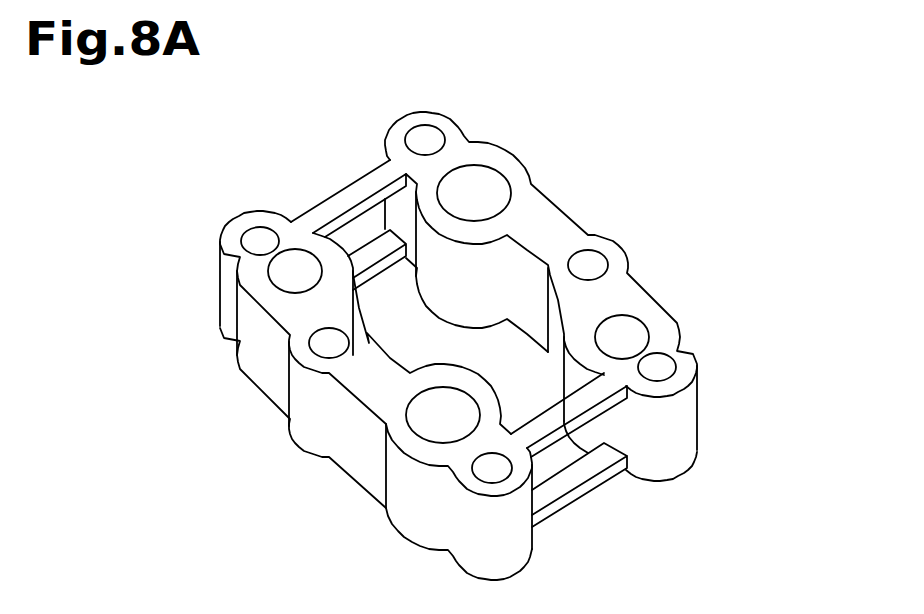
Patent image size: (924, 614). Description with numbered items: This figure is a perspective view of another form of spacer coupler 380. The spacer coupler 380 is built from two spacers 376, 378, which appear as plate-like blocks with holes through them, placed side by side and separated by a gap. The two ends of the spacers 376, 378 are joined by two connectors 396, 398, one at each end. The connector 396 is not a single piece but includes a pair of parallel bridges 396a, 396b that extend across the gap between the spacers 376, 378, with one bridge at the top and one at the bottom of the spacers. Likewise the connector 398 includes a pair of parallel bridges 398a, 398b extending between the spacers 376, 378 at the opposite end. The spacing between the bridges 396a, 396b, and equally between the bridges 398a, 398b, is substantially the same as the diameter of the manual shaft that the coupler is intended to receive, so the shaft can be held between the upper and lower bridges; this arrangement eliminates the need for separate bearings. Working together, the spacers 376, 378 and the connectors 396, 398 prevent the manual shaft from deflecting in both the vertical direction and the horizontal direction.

The spacer 376 is at (616, 242).
The spacer 378 is at (345, 432).
The spacer coupler 380 is at (643, 144).
The connector 396 is at (243, 131).
The bridge 396a is at (368, 184).
The bridge 396b is at (367, 262).
The connector 398 is at (745, 491).
The bridge 398a is at (628, 399).
The bridge 398b is at (578, 478).